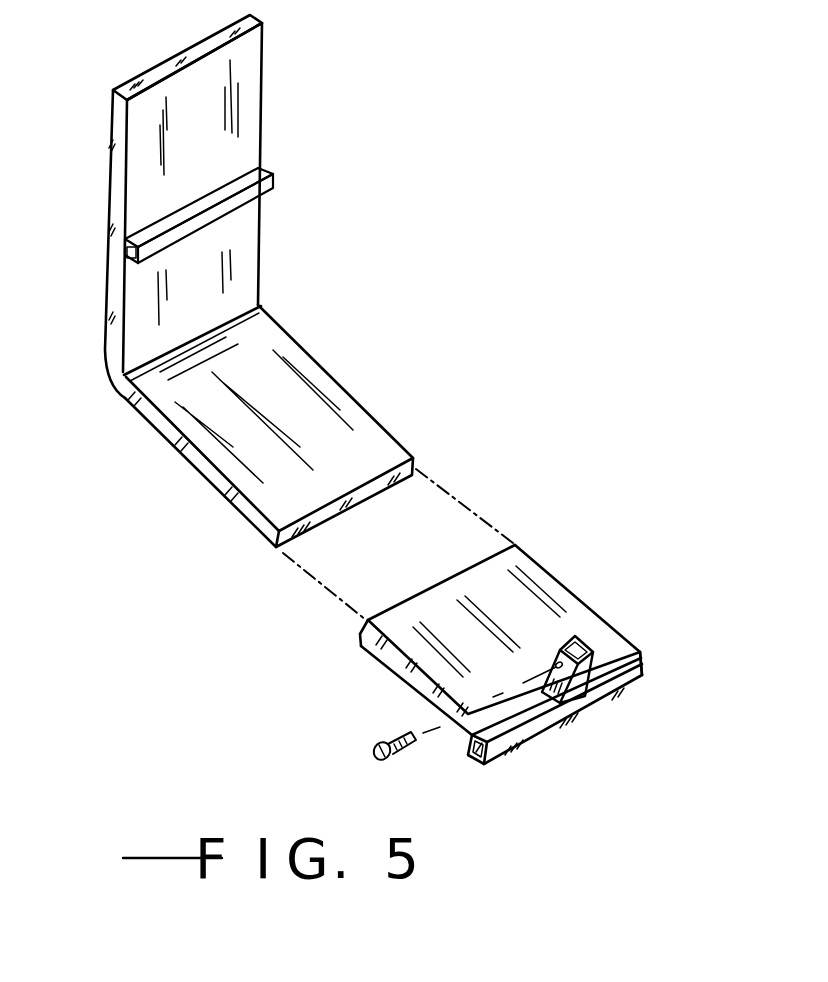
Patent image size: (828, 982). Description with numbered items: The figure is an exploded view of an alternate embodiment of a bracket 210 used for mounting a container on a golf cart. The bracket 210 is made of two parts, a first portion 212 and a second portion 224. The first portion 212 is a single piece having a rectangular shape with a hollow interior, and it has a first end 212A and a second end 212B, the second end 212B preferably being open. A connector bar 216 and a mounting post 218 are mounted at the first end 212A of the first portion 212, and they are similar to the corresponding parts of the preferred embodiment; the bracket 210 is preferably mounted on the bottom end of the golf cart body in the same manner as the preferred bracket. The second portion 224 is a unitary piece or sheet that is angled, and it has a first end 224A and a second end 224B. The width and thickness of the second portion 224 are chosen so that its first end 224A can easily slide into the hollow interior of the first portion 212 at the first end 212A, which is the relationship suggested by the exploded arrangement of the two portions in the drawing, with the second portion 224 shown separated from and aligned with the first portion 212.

The bracket 210 is at (180, 480).
The first portion 212 is at (556, 618).
The first end 212A is at (607, 637).
The second end 212B is at (537, 583).
The connector bar 216 is at (627, 682).
The mounting post 218 is at (578, 690).
The second portion 224 is at (316, 281).
The first end 224A is at (393, 453).
The second end 224B is at (263, 43).